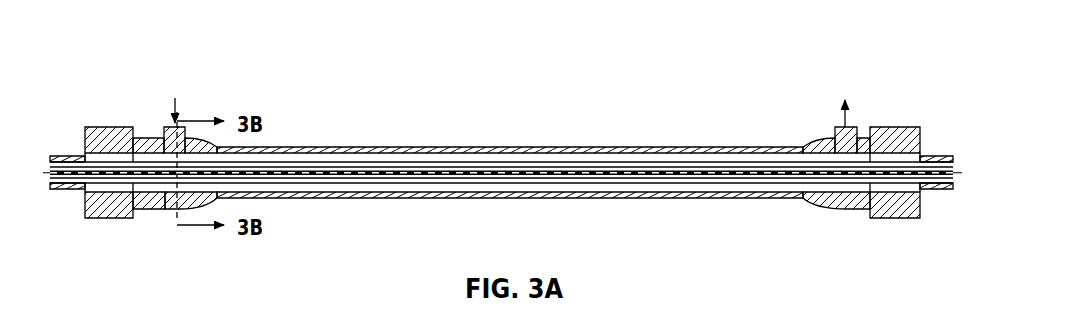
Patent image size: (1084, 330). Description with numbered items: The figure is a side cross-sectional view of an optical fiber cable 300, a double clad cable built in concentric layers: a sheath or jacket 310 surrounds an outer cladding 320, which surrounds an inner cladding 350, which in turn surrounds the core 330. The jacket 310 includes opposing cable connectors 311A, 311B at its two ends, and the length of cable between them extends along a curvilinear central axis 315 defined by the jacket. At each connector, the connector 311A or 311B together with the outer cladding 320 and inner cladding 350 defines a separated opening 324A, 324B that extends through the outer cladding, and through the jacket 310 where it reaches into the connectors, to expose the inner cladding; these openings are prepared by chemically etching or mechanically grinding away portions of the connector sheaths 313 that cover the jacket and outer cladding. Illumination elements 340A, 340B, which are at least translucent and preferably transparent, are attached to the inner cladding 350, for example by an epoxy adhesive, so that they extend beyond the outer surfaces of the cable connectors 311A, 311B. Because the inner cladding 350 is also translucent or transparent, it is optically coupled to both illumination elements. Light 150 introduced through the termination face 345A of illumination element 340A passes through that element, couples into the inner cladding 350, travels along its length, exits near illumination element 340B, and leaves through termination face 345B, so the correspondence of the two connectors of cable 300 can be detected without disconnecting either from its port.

The optical fiber cable 300 is at (131, 47).
The jacket 310 is at (568, 202).
The cable connector 311A is at (89, 220).
The cable connector 311B is at (837, 211).
The connector sheath 313 is at (152, 197).
The curvilinear central axis 315 is at (692, 173).
The outer cladding 320 is at (446, 186).
The separated opening 324A is at (152, 137).
The separated opening 324B is at (890, 126).
The core 330 is at (618, 171).
The illumination element 340A is at (194, 116).
The illumination element 340B is at (832, 121).
The termination face 345A is at (168, 125).
The termination face 345B is at (835, 125).
The inner cladding 350 is at (495, 167).
The light 150 is at (178, 114).